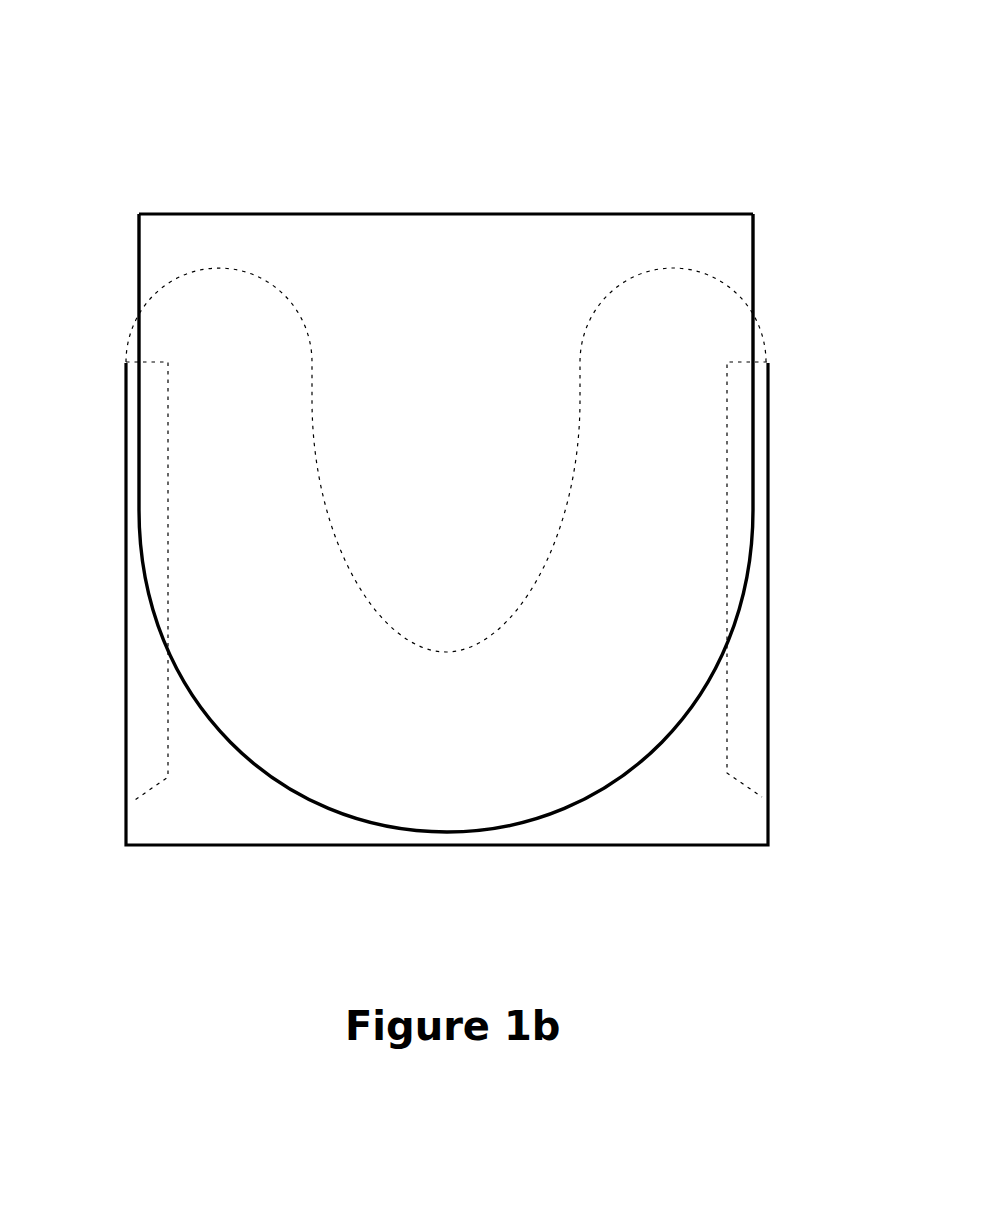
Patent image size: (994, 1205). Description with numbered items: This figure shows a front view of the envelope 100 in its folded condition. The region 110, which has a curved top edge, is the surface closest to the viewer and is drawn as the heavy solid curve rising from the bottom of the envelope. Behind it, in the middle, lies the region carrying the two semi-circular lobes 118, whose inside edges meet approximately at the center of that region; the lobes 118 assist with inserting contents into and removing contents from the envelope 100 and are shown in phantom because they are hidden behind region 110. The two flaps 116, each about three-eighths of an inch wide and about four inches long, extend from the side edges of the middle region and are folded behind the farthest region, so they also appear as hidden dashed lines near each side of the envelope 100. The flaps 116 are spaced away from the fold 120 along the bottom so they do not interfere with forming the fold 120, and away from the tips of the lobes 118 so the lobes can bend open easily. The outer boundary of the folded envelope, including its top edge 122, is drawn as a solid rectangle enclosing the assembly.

The envelope 100 is at (528, 140).
The region 110 is at (472, 769).
The flaps 116 is at (750, 688).
The lobes 118 is at (685, 314).
The fold 120 is at (127, 846).
The top edge 122 is at (177, 214).